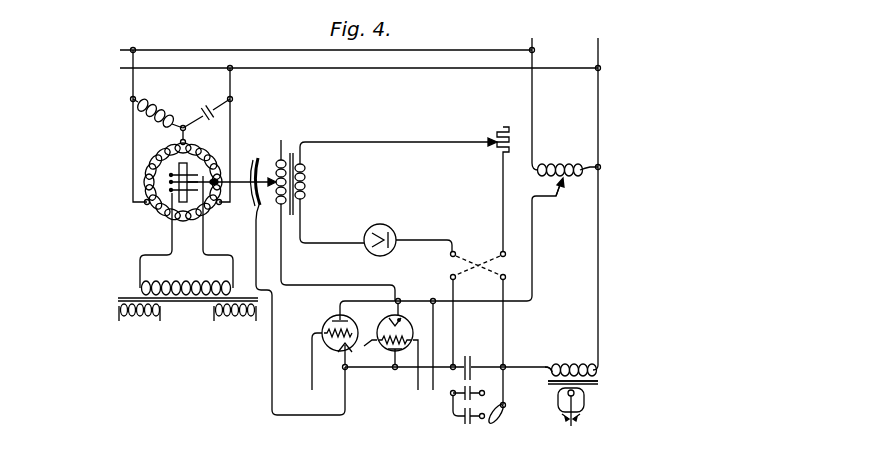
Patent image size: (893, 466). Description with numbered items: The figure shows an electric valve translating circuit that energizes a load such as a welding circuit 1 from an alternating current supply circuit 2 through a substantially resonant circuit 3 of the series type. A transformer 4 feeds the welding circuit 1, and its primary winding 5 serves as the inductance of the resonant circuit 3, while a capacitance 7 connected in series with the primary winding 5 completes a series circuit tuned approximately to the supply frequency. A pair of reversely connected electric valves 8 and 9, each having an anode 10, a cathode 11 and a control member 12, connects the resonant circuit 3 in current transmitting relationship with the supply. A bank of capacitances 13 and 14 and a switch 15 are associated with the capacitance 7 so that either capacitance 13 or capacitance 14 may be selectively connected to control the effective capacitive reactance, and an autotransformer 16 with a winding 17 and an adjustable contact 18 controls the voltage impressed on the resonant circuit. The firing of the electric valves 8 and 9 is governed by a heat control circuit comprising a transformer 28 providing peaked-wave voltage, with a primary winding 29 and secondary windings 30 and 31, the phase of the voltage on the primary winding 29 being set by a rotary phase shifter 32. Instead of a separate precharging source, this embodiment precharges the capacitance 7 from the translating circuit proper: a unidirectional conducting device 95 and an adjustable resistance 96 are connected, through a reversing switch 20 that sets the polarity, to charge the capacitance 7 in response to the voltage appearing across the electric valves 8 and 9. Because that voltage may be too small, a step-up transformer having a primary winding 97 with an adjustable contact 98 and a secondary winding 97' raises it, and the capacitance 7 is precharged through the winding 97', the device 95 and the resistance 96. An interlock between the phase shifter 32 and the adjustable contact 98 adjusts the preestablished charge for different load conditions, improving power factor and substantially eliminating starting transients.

The welding circuit 1 is at (576, 422).
The alternating current supply circuit 2 is at (598, 105).
The resonant circuit 3 is at (545, 352).
The transformer 4 is at (600, 383).
The primary winding 5 is at (573, 363).
The capacitance 7 is at (470, 352).
The electric valve 8 is at (324, 322).
The electric valve 9 is at (412, 318).
The anode 10 is at (346, 319).
The cathode 11 is at (336, 350).
The control member 12 is at (384, 351).
The capacitance 13 is at (464, 426).
The capacitance 14 is at (471, 385).
The switch 15 is at (506, 419).
The autotransformer 16 is at (573, 155).
The winding 17 is at (591, 161).
The adjustable contact 18 is at (564, 184).
The reversing switch 20 is at (478, 268).
The transformer 28 is at (118, 298).
The primary winding 29 is at (186, 235).
The secondary winding 30 is at (139, 320).
The secondary winding 31 is at (233, 316).
The rotary phase shifter 32 is at (214, 210).
The unidirectional conducting device 95 is at (392, 226).
The adjustable resistance 96 is at (499, 151).
The primary winding 97 is at (325, 217).
The secondary winding 97' is at (396, 190).
The adjustable contact 98 is at (262, 205).